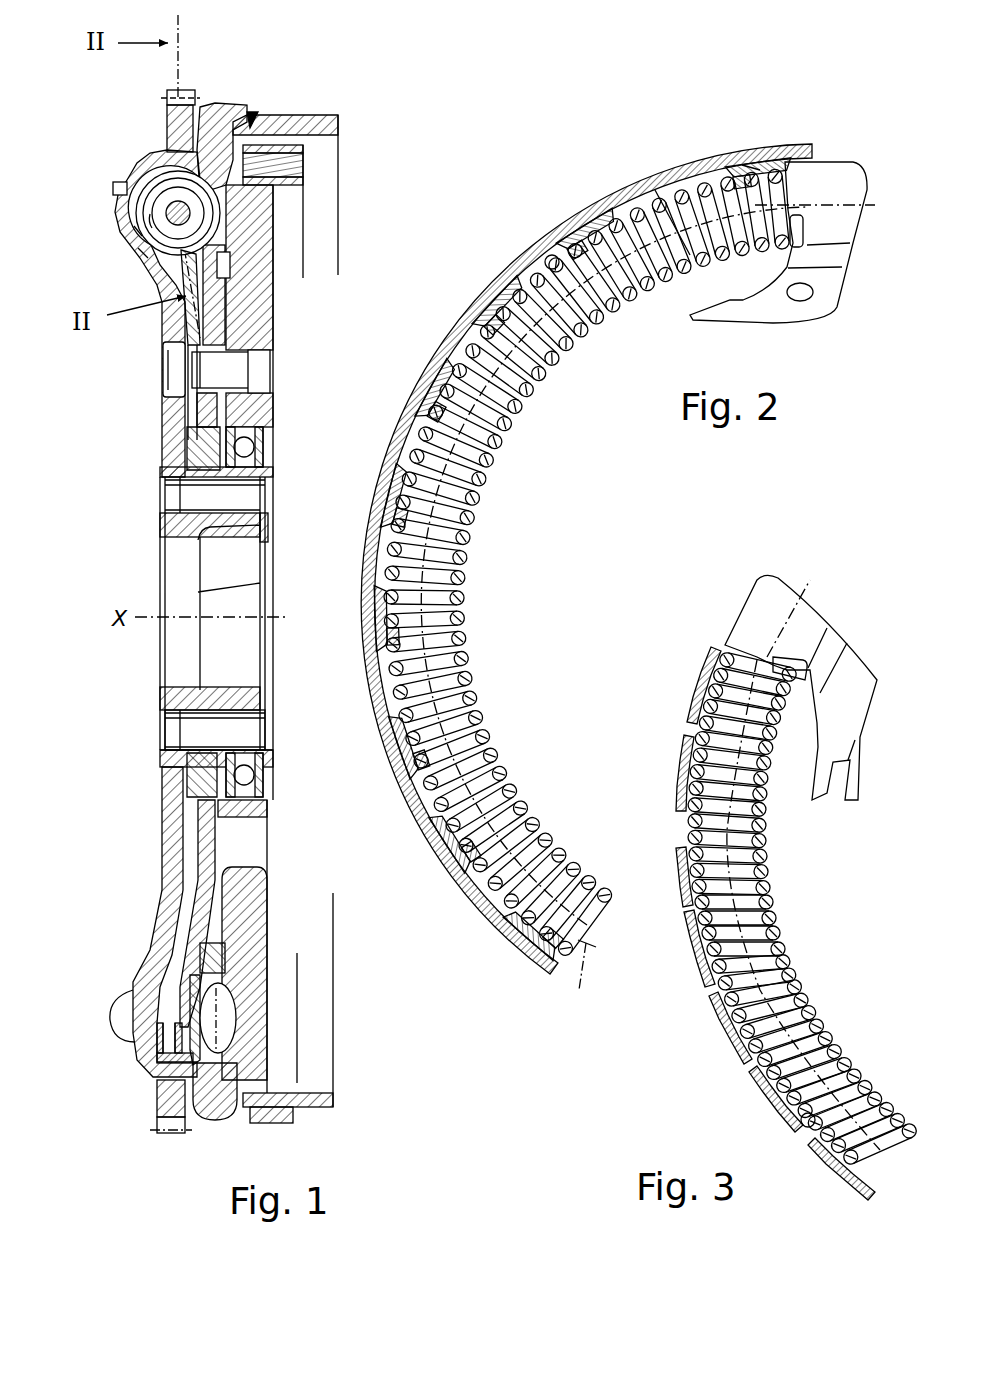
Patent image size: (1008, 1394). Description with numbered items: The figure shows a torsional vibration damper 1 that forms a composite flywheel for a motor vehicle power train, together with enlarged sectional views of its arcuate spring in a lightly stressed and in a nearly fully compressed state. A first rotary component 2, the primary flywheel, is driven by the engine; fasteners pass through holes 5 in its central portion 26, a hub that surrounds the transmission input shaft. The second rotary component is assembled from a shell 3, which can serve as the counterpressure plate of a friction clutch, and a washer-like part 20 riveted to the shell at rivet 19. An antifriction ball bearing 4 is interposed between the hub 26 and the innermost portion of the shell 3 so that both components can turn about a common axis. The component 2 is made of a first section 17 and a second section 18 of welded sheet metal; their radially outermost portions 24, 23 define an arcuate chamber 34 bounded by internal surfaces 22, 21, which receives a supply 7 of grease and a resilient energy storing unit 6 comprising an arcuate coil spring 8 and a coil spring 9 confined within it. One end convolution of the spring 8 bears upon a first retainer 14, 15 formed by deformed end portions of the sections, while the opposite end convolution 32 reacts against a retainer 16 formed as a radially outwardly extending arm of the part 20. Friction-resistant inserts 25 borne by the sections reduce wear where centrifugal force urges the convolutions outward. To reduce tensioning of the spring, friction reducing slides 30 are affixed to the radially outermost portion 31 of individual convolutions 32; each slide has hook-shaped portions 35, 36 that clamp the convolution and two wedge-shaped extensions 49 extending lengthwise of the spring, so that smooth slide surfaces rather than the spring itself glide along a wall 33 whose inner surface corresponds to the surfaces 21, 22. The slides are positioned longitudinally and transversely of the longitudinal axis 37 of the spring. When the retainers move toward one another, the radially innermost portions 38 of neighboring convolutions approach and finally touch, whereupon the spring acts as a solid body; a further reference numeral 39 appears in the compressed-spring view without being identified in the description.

In FIG. 1, the torsional vibration damper 1 is at (303, 78).
In FIG. 1, the first rotary component 2 is at (152, 442).
In FIG. 2, the first rotary component 2 is at (596, 188).
In FIG. 1, the shell 3 is at (284, 336).
In FIG. 1, the antifriction ball bearing 4 is at (252, 447).
In FIG. 1, the holes 5 is at (175, 734).
In FIG. 1, the resilient energy storing unit 6 is at (135, 233).
In FIG. 1, the supply of lubricant 7 is at (140, 252).
In FIG. 1, the arcuate coil spring 8 is at (155, 268).
In FIG. 2, the arcuate coil spring 8 is at (548, 258).
In FIG. 3, the arcuate coil spring 8 is at (830, 1162).
In FIG. 1, the coil spring 9 is at (150, 218).
In FIG. 1, the first retainer 14 is at (140, 1030).
In FIG. 1, the retainer portion 15 is at (207, 1018).
In FIG. 1, the retainer 16 is at (173, 1013).
In FIG. 2, the retainer 16 is at (832, 176).
In FIG. 3, the retainer 16 is at (752, 615).
In FIG. 1, the first section 17 is at (172, 905).
In FIG. 1, the second section 18 is at (208, 988).
In FIG. 1, the rivet 19 is at (240, 372).
In FIG. 1, the washer-like part 20 is at (210, 850).
In FIG. 2, the washer-like part 20 is at (833, 292).
In FIG. 3, the washer-like part 20 is at (848, 760).
In FIG. 1, the internal surface 21 is at (224, 257).
In FIG. 1, the internal surface 22 is at (172, 215).
In FIG. 1, the radially outermost portion 23 is at (220, 190).
In FIG. 1, the radially outermost portion 24 is at (140, 200).
In FIG. 1, the friction-resistant insert 25 is at (153, 173).
In FIG. 1, the central portion 26 is at (190, 538).
In FIG. 2, the friction reducing slide 30 is at (588, 226).
In FIG. 3, the friction reducing slide 30 is at (768, 1100).
In FIG. 2, the radially outermost portion 31 is at (505, 290).
In FIG. 2, the convolution 32 is at (575, 340).
In FIG. 2, the wall 33 is at (755, 165).
In FIG. 2, the arcuate chamber 34 is at (660, 187).
In FIG. 2, the hook-shaped portion 35 is at (367, 643).
In FIG. 2, the hook-shaped portion 36 is at (373, 600).
In FIG. 2, the longitudinal axis 37 is at (581, 980).
In FIG. 2, the radially innermost portions 38 is at (520, 812).
In FIG. 3, the radially innermost portions 38 is at (770, 872).
In FIG. 3, the end coil 39 is at (806, 1127).
In FIG. 2, the extensions 49 is at (383, 760).
In FIG. 3, the extensions 49 is at (700, 690).